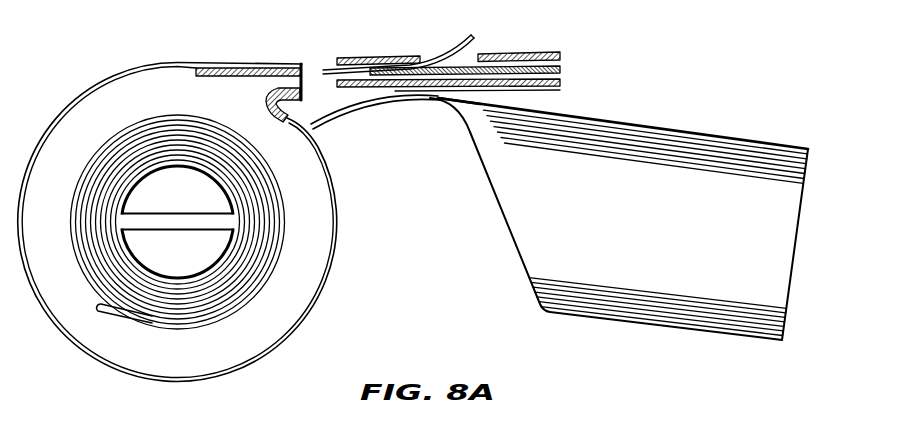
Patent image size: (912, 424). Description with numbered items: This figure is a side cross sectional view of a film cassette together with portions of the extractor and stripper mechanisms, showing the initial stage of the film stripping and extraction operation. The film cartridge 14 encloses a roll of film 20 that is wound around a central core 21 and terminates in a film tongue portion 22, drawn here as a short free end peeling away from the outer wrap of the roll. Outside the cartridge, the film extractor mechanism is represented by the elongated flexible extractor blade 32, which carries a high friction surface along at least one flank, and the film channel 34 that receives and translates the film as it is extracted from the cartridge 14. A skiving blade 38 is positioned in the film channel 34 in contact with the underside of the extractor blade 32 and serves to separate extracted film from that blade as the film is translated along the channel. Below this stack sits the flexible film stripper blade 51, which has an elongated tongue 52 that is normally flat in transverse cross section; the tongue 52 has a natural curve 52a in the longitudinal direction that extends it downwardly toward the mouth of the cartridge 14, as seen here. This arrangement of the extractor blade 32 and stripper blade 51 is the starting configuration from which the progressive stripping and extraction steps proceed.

The film cartridge 14 is at (262, 357).
The roll of film 20 is at (276, 272).
The central core 21 is at (216, 256).
The film tongue portion 22 is at (117, 318).
The extractor blade 32 is at (463, 33).
The film channel 34 is at (352, 57).
The skiving blade 38 is at (540, 81).
The film stripper blade 51 is at (758, 137).
The tongue 52 is at (345, 107).
The natural curve 52a is at (425, 94).